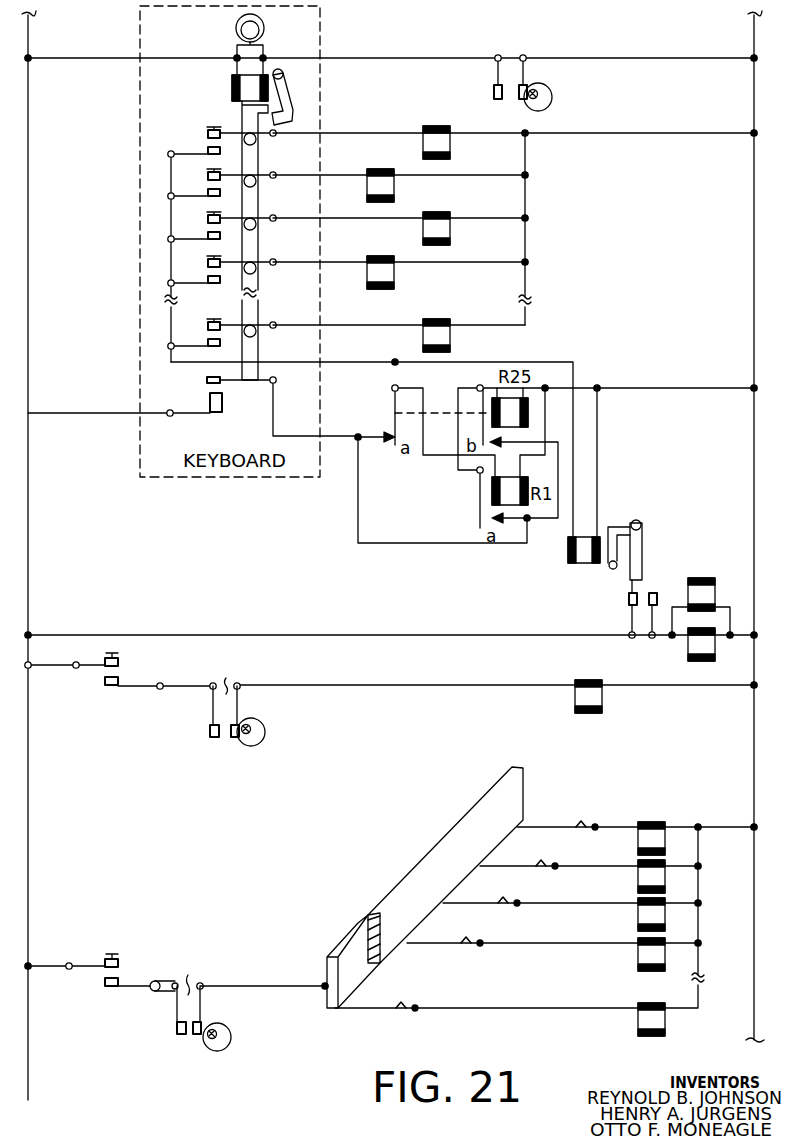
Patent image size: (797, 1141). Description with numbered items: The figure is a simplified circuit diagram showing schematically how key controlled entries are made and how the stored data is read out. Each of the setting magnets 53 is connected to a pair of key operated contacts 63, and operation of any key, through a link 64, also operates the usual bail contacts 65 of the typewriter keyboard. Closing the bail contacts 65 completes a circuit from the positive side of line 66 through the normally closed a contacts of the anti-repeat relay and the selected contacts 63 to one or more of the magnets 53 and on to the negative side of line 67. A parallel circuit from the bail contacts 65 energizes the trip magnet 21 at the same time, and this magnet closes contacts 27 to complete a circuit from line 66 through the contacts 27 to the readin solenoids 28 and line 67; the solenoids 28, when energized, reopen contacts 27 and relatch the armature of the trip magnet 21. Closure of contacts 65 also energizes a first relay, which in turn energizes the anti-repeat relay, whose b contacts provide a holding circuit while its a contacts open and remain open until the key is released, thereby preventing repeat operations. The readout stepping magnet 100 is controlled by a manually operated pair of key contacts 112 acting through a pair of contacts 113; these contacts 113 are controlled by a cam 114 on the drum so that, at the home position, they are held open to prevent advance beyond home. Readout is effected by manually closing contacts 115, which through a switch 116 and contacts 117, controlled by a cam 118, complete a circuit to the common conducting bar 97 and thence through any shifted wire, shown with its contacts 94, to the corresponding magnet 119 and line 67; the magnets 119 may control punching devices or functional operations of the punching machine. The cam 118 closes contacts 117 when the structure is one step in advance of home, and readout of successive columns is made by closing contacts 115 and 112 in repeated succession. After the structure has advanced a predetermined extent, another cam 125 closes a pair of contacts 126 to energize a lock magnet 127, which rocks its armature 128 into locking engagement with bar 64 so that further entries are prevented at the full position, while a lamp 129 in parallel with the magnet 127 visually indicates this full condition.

The trip magnet 21 is at (584, 563).
The contacts 27 is at (640, 593).
The readin solenoids 28 is at (708, 618).
The magnets 53 is at (394, 190).
The key operated contacts 63 is at (204, 228).
The link 64 is at (258, 358).
The bail contacts 65 is at (206, 393).
The positive side of line 66 is at (28, 298).
The negative side of line 67 is at (754, 298).
The contacts 94 is at (500, 876).
The common conducting bar 97 is at (395, 888).
The magnet 100 is at (600, 700).
The key contacts 112 is at (120, 674).
The contacts 113 is at (209, 710).
The cam 114 is at (260, 742).
The contacts 115 is at (120, 975).
The switch 116 is at (166, 980).
The contacts 117 is at (258, 994).
The cam 118 is at (226, 1048).
The magnets 119 is at (640, 918).
The cam 125 is at (548, 107).
The contacts 126 is at (500, 100).
The lock magnet 127 is at (238, 102).
The armature 128 is at (295, 114).
The lamp 129 is at (237, 26).